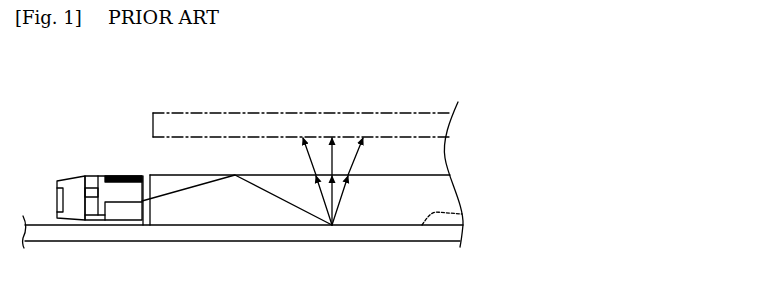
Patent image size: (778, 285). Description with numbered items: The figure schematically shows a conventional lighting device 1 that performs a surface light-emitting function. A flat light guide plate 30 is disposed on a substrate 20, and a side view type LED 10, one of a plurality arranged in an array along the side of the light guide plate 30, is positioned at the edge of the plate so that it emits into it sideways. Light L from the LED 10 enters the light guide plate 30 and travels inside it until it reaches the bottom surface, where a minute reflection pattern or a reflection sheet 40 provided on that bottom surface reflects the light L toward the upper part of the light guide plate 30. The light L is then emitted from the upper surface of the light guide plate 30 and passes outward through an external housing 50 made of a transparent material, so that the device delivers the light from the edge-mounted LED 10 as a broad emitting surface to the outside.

The lighting device 1 is at (146, 77).
The side view type LED 10 is at (105, 166).
The substrate 20 is at (290, 243).
The light guide plate 30 is at (447, 190).
The reflection sheet 40 is at (472, 215).
The external housing 50 is at (325, 112).
The light L is at (174, 192).